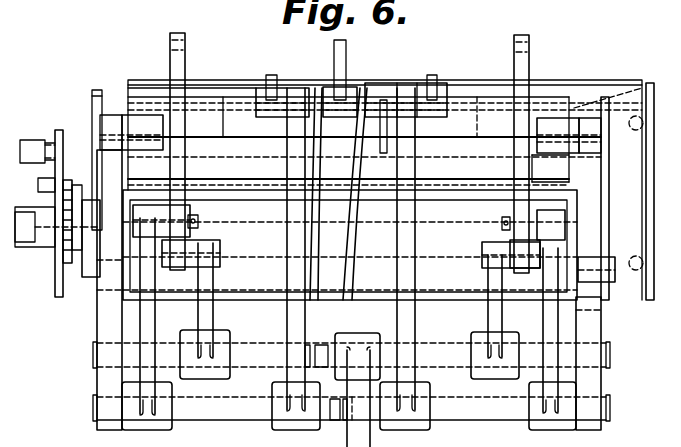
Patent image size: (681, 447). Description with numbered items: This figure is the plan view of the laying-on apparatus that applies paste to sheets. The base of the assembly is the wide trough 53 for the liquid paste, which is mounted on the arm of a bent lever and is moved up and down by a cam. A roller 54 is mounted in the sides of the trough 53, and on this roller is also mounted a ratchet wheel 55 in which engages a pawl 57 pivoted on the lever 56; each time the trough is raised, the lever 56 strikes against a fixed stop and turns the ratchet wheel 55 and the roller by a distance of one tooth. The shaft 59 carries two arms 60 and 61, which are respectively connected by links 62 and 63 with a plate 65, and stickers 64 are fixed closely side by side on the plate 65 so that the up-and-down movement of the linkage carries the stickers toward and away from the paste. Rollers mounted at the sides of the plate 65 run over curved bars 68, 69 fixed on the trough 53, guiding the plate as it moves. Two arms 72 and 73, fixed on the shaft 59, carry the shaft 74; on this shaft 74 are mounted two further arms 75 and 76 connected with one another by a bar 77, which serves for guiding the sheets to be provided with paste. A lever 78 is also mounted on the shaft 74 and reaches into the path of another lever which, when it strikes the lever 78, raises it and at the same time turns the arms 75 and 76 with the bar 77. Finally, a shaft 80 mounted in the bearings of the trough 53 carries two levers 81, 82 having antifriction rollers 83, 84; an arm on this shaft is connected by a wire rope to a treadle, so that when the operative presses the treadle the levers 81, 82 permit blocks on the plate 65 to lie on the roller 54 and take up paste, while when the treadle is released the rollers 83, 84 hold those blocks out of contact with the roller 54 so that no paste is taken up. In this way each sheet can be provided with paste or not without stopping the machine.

The trough 53 is at (105, 305).
The roller 54 is at (258, 198).
The ratchet wheel 55 is at (87, 198).
The lever 56 is at (55, 277).
The pawl 57 is at (62, 150).
The shaft 59 is at (230, 418).
The arm 60 is at (148, 340).
The arm 61 is at (551, 317).
The link 62 is at (172, 57).
The link 63 is at (514, 63).
The stickers 64 is at (368, 130).
The plate 65 is at (248, 170).
The curved bar 68 is at (104, 280).
The curved bar 69 is at (600, 283).
The arm 72 is at (287, 314).
The arm 73 is at (412, 315).
The shaft 74 is at (452, 92).
The arm 75 is at (272, 97).
The arm 76 is at (430, 95).
The bar 77 is at (237, 90).
The lever 78 is at (346, 60).
The shaft 80 is at (415, 340).
The lever 81 is at (215, 283).
The lever 82 is at (497, 281).
The antifriction roller 83 is at (195, 240).
The antifriction roller 84 is at (515, 245).